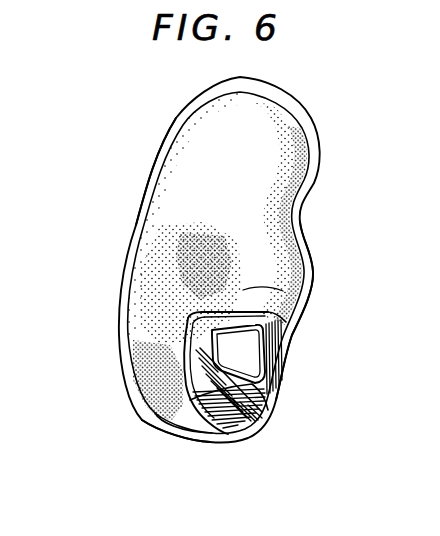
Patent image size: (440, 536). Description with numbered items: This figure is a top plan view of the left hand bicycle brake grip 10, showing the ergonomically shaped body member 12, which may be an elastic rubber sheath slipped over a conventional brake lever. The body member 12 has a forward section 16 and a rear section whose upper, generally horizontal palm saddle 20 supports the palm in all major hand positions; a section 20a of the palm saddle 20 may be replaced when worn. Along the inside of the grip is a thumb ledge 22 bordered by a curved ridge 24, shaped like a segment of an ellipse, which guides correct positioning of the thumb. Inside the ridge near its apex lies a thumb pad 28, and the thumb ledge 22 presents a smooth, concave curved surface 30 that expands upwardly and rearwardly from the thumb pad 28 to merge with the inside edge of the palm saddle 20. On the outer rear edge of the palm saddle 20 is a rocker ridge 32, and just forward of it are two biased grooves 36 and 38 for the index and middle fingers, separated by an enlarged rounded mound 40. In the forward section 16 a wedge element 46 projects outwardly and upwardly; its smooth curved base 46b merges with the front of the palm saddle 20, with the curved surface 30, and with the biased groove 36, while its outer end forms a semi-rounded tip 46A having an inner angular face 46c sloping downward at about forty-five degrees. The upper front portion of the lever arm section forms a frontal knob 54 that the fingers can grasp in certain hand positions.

The bicycle brake grip 10 is at (156, 126).
The body member 12 is at (283, 160).
The forward section 16 is at (243, 423).
The palm saddle 20 is at (258, 138).
The replaceable section of the palm saddle 20a is at (243, 194).
The thumb ledge 22 is at (162, 298).
The curved ridge 24 is at (114, 283).
The thumb pad 28 is at (186, 388).
The curved surface 30 is at (150, 331).
The rocker ridge 32 is at (319, 123).
The biased groove 36 is at (286, 352).
The biased groove 38 is at (298, 217).
The rounded mound 40 is at (312, 268).
The wedge element 46 is at (212, 437).
The semi-rounded tip 46A is at (275, 403).
The curved base 46b is at (238, 287).
The inner angular face 46c is at (148, 407).
The frontal knob 54 is at (248, 440).